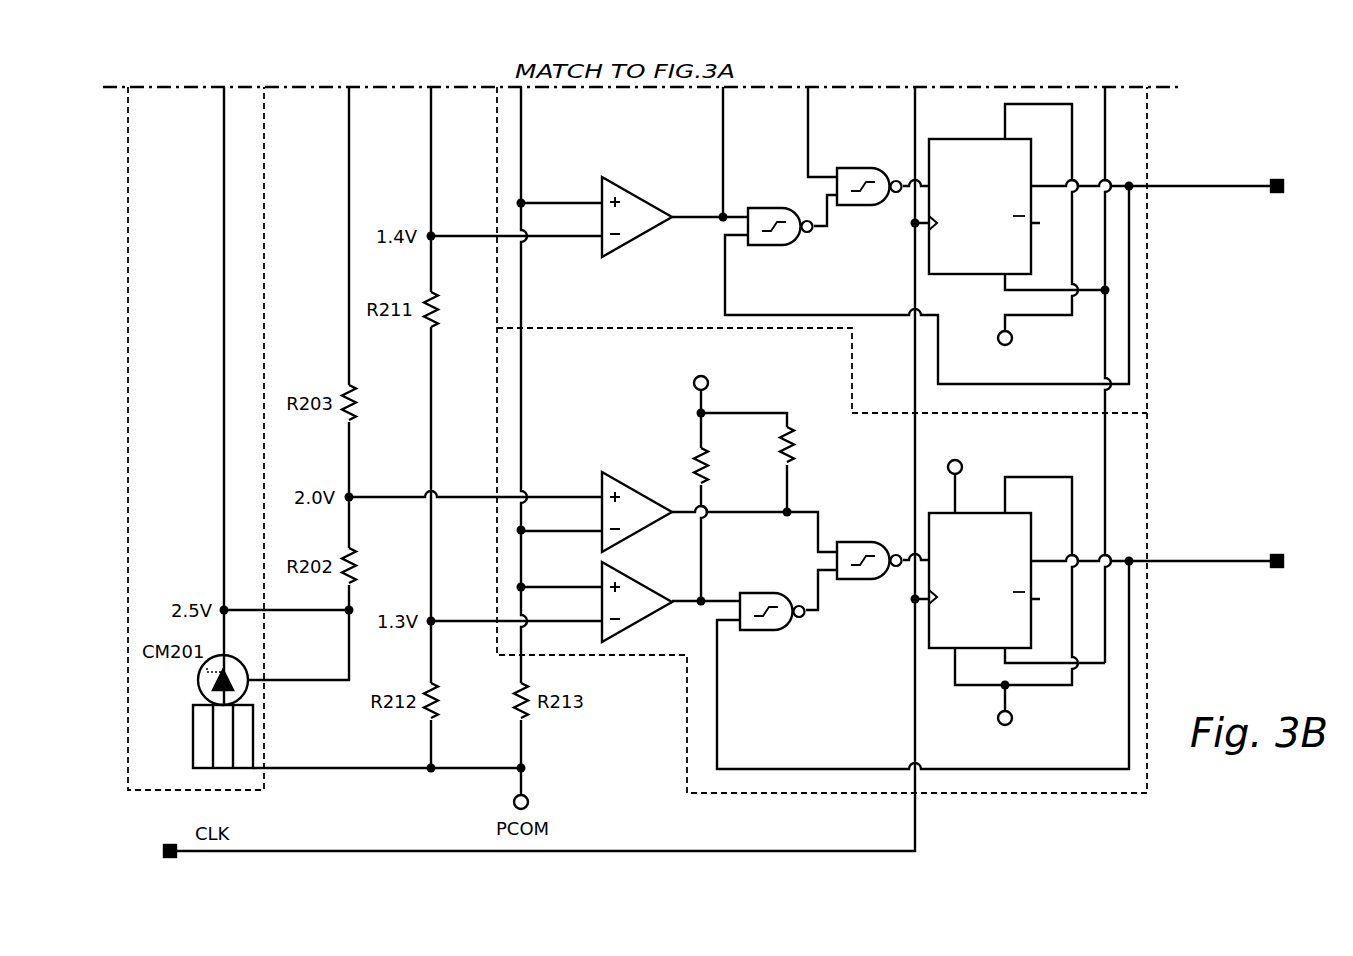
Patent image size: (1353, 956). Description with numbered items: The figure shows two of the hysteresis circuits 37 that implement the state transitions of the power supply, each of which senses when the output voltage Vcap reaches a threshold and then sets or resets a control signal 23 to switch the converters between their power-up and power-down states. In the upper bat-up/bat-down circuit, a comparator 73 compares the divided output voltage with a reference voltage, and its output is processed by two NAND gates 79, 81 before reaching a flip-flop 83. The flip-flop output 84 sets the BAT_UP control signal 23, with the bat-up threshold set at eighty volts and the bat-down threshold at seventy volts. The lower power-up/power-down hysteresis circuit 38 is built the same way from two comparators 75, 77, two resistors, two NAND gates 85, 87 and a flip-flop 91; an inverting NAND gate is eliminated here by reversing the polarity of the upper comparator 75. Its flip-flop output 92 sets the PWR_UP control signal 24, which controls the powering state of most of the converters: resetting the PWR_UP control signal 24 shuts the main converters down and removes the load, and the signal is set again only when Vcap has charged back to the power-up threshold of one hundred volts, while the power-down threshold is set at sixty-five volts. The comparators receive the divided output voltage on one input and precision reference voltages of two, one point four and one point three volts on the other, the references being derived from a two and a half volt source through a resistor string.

The control signal 23 is at (1284, 191).
The PWR_UP control signal 24 is at (1210, 563).
The hysteresis circuit 37 is at (1180, 265).
The power-up/power-down hysteresis circuit 38 is at (806, 397).
The comparator 73 is at (640, 197).
The upper comparator 75 is at (603, 480).
The comparator 77 is at (645, 580).
The NAND gate 79 is at (770, 207).
The NAND gate 81 is at (858, 168).
The flip-flop 83 is at (975, 139).
The flip-flop output 84 is at (1050, 175).
The NAND gate 85 is at (765, 628).
The NAND gate 87 is at (845, 540).
The flip-flop 91 is at (982, 510).
The flip-flop output 92 is at (1052, 555).